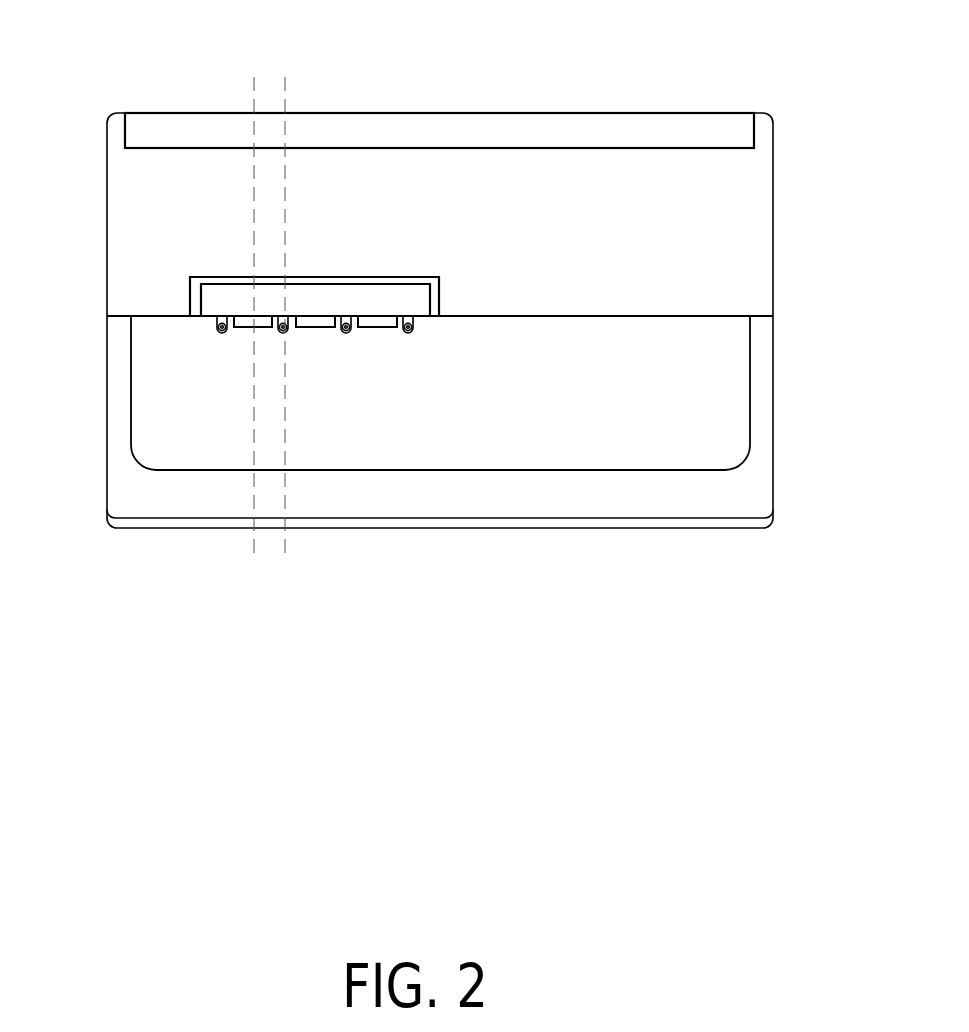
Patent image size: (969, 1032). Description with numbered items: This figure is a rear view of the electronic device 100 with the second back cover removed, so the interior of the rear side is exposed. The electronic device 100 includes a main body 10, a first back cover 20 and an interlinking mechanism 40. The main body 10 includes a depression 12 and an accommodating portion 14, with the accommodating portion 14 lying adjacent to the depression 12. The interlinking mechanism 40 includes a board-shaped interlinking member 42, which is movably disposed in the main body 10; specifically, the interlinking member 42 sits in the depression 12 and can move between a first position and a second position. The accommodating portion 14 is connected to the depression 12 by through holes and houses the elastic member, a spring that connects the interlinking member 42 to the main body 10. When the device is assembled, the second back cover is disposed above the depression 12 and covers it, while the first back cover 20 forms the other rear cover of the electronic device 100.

The electronic device 100 is at (654, 43).
The main body 10 is at (773, 226).
The depression 12 is at (428, 280).
The accommodating portion 14 is at (243, 322).
The first back cover 20 is at (758, 383).
The interlinking mechanism 40 is at (236, 225).
The interlinking member 42 is at (355, 300).